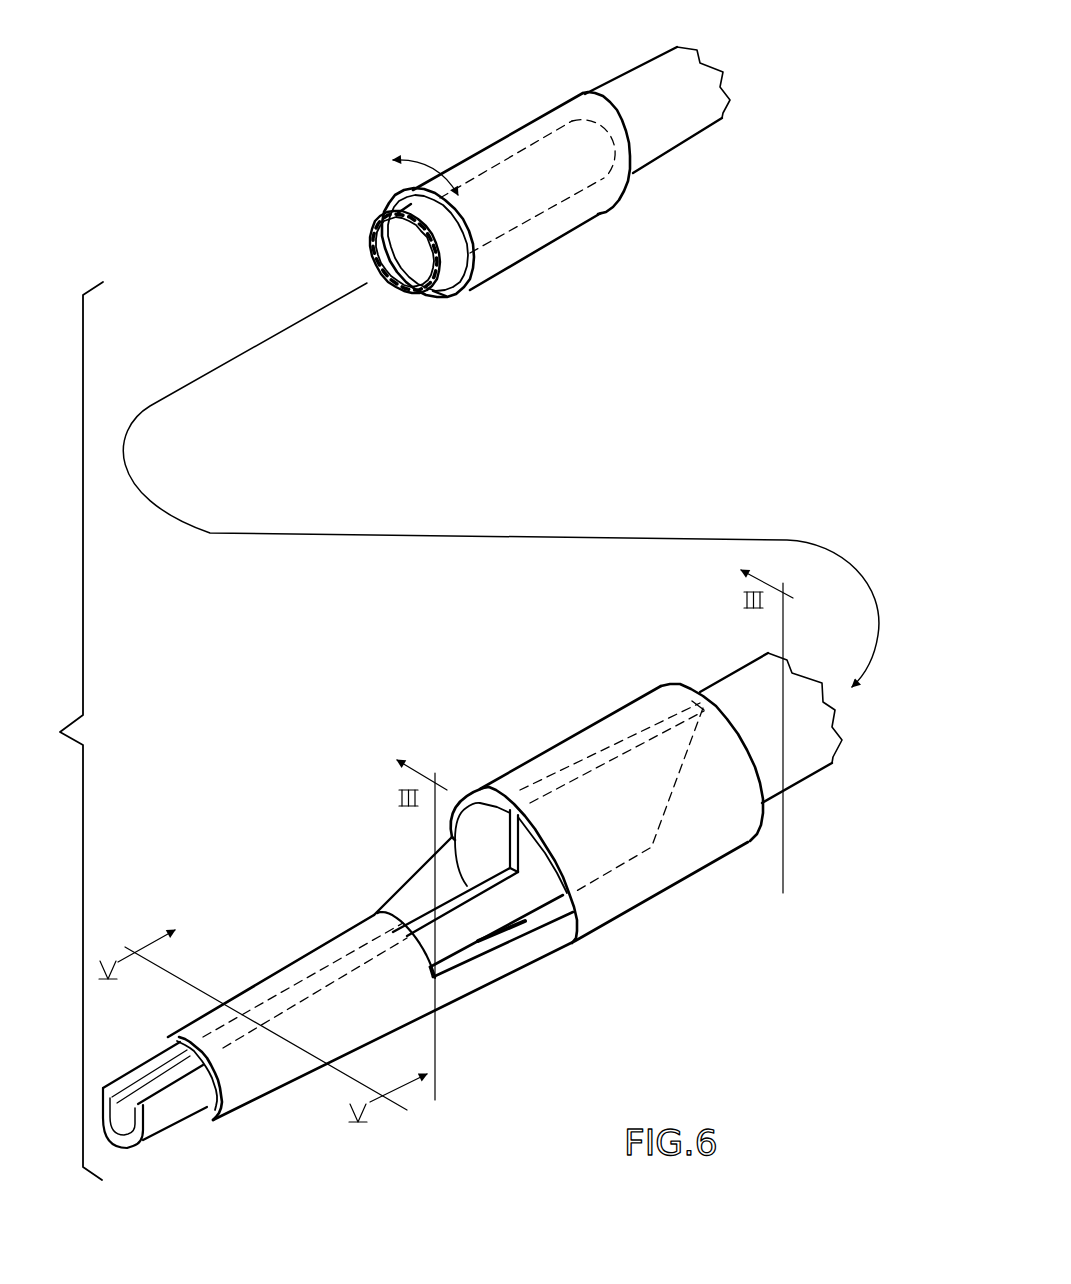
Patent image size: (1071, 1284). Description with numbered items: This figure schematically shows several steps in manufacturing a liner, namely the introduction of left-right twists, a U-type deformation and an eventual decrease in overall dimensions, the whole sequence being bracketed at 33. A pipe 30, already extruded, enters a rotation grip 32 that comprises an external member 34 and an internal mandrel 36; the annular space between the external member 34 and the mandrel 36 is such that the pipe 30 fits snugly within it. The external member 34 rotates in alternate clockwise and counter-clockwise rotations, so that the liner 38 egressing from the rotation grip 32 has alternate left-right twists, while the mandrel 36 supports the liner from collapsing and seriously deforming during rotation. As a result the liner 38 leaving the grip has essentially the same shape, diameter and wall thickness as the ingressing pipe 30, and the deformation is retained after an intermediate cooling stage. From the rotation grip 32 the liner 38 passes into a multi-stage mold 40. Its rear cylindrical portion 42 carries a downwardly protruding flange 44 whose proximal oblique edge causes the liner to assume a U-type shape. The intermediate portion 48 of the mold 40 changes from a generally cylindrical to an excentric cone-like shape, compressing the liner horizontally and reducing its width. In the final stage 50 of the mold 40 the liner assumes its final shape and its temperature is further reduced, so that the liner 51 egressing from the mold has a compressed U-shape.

The pipe 30 is at (687, 88).
The rotation grip 32 is at (488, 107).
The connector assembly 33 is at (62, 731).
The external member 34 is at (542, 225).
The internal mandrel 36 is at (578, 160).
The liner 38 is at (443, 267).
The multi-stage mold 40 is at (523, 733).
The rear cylindrical portion 42 is at (698, 838).
The downwardly protruding flange 44 is at (617, 818).
The intermediate portion 48 is at (523, 952).
The final stage 50 is at (270, 1080).
The liner 51 is at (170, 1120).